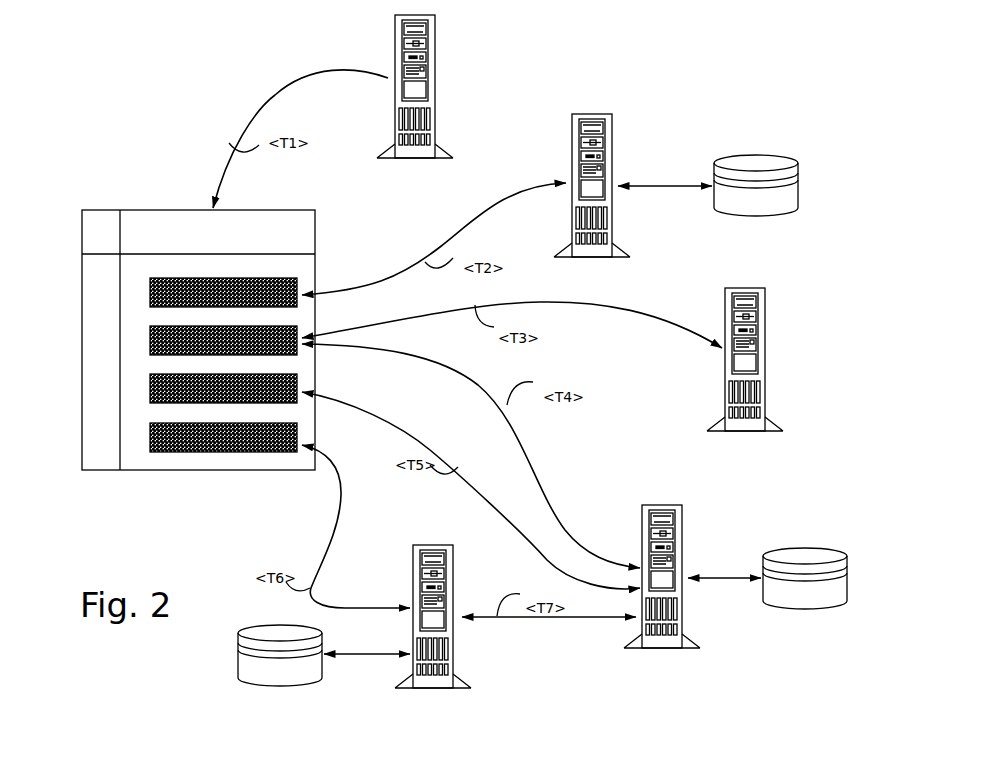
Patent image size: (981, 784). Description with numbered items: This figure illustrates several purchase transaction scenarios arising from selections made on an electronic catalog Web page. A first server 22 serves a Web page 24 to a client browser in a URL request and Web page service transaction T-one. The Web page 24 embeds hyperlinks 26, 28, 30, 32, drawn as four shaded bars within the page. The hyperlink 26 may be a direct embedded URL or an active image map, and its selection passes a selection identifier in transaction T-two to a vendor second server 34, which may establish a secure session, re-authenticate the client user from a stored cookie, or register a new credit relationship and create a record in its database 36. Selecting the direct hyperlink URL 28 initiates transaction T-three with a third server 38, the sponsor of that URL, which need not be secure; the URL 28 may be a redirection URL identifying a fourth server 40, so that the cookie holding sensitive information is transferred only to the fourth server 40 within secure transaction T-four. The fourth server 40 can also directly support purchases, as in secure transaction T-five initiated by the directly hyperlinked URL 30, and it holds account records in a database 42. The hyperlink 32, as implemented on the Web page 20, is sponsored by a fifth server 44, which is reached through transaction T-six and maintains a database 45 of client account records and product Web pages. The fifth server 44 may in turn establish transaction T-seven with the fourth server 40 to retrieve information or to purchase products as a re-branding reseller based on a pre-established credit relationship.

The Web page 20 is at (643, 25).
The Server-1 22 is at (443, 117).
The Web page 24 is at (196, 470).
The hyperlink 26 is at (150, 290).
The direct hyperlink URL 28 is at (150, 341).
The directly hyperlinked URL 30 is at (150, 391).
The hyperlink 32 is at (150, 433).
The Server-2 34 is at (618, 208).
The database 36 is at (730, 212).
The Server-3 38 is at (770, 375).
The Server-4 40 is at (687, 530).
The database 42 is at (760, 597).
The Server-5 44 is at (428, 543).
The database 45 is at (238, 673).